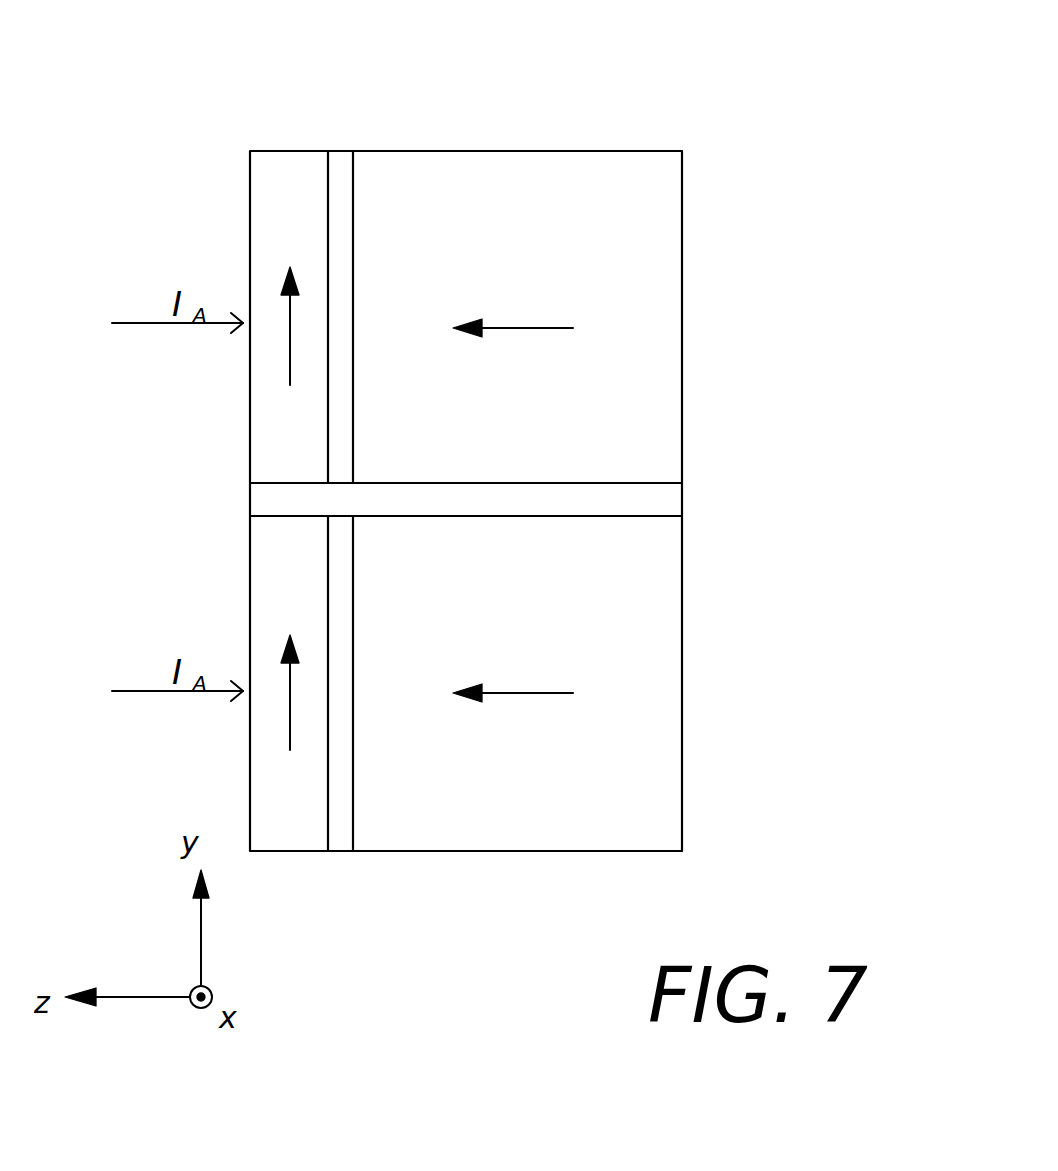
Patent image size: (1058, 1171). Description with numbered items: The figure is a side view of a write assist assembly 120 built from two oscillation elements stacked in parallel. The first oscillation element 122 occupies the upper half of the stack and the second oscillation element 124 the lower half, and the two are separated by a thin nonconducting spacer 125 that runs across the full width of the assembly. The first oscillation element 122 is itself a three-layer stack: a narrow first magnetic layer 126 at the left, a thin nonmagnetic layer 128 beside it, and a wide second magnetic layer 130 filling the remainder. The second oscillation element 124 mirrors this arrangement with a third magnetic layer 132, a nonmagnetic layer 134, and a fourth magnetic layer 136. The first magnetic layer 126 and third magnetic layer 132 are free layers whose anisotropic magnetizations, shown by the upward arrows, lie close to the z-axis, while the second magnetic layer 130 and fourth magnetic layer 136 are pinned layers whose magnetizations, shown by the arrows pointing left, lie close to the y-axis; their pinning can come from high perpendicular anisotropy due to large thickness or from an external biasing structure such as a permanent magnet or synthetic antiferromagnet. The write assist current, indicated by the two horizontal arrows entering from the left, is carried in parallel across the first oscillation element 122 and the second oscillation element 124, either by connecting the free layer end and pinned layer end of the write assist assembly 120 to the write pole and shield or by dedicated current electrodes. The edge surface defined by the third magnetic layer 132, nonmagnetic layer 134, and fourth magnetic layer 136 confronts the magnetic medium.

The write assist assembly 120 is at (623, 118).
The first oscillation element 122 is at (717, 330).
The second oscillation element 124 is at (712, 685).
The nonconducting spacer 125 is at (660, 495).
The first magnetic layer 126 is at (299, 157).
The nonmagnetic layer 128 is at (338, 160).
The second magnetic layer 130 is at (667, 227).
The third magnetic layer 132 is at (300, 843).
The nonmagnetic layer 134 is at (338, 843).
The fourth magnetic layer 136 is at (654, 808).